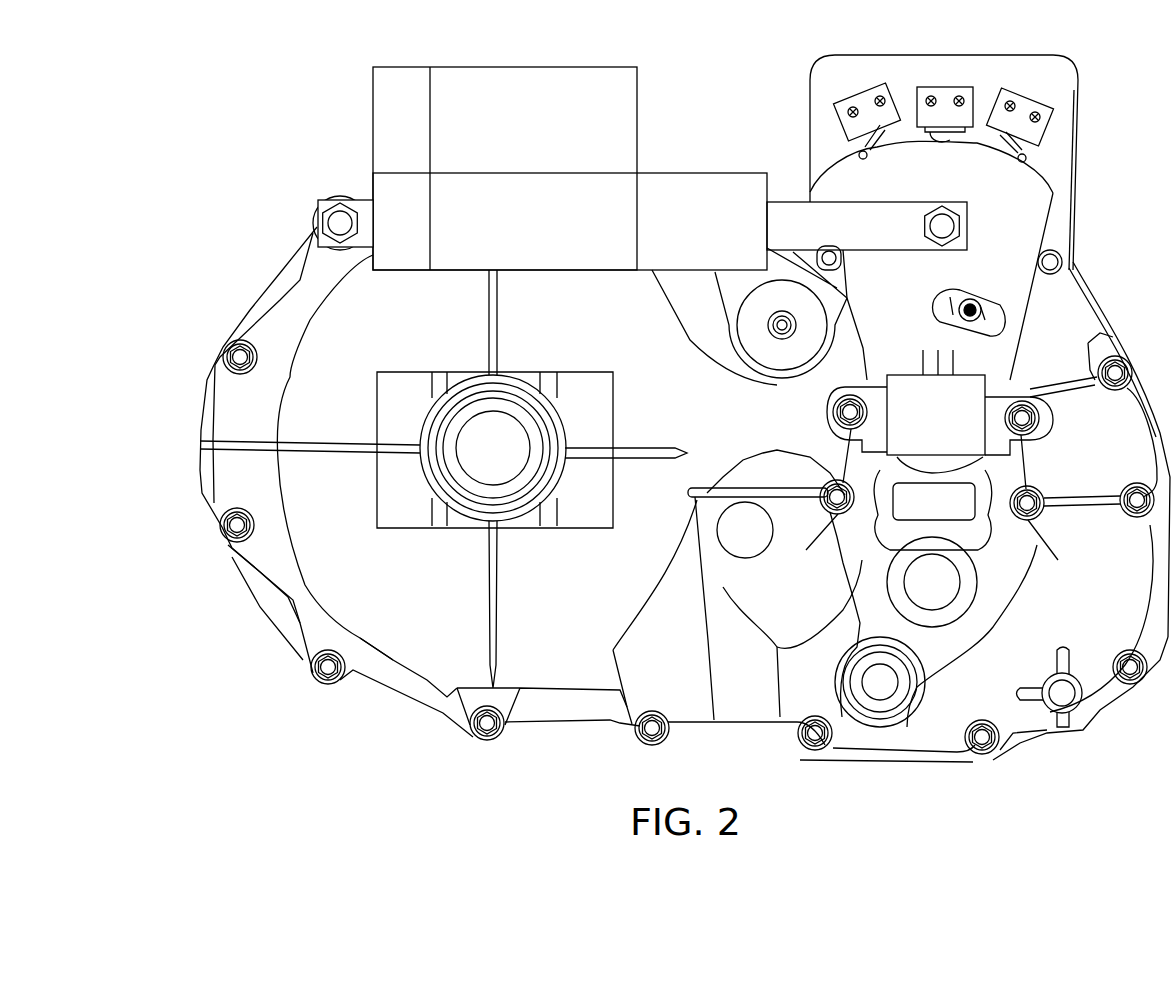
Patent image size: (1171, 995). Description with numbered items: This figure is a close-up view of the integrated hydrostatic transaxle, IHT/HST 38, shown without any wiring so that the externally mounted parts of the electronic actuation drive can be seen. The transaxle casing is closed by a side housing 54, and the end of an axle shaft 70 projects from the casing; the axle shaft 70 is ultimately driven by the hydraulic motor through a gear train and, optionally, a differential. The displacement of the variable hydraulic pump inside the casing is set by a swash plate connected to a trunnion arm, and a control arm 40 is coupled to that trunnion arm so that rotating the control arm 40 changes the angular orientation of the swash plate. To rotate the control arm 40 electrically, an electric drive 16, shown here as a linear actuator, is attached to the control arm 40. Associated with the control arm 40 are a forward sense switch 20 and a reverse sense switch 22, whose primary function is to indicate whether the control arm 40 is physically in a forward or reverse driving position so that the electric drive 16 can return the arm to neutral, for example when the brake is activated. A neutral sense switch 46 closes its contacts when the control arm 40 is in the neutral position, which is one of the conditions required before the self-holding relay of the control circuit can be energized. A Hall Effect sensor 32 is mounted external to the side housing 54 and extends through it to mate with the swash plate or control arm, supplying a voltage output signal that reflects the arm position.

The IHT/HST 38 is at (662, 454).
The electric drive 16 is at (373, 118).
The neutral sense switch 46 is at (945, 87).
The reverse sense switch 22 is at (845, 128).
The forward sense switch 20 is at (1073, 150).
The control arm 40 is at (1022, 236).
The Hall Effect sensor 32 is at (952, 432).
The axle shaft 70 is at (509, 462).
The side housing 54 is at (436, 604).